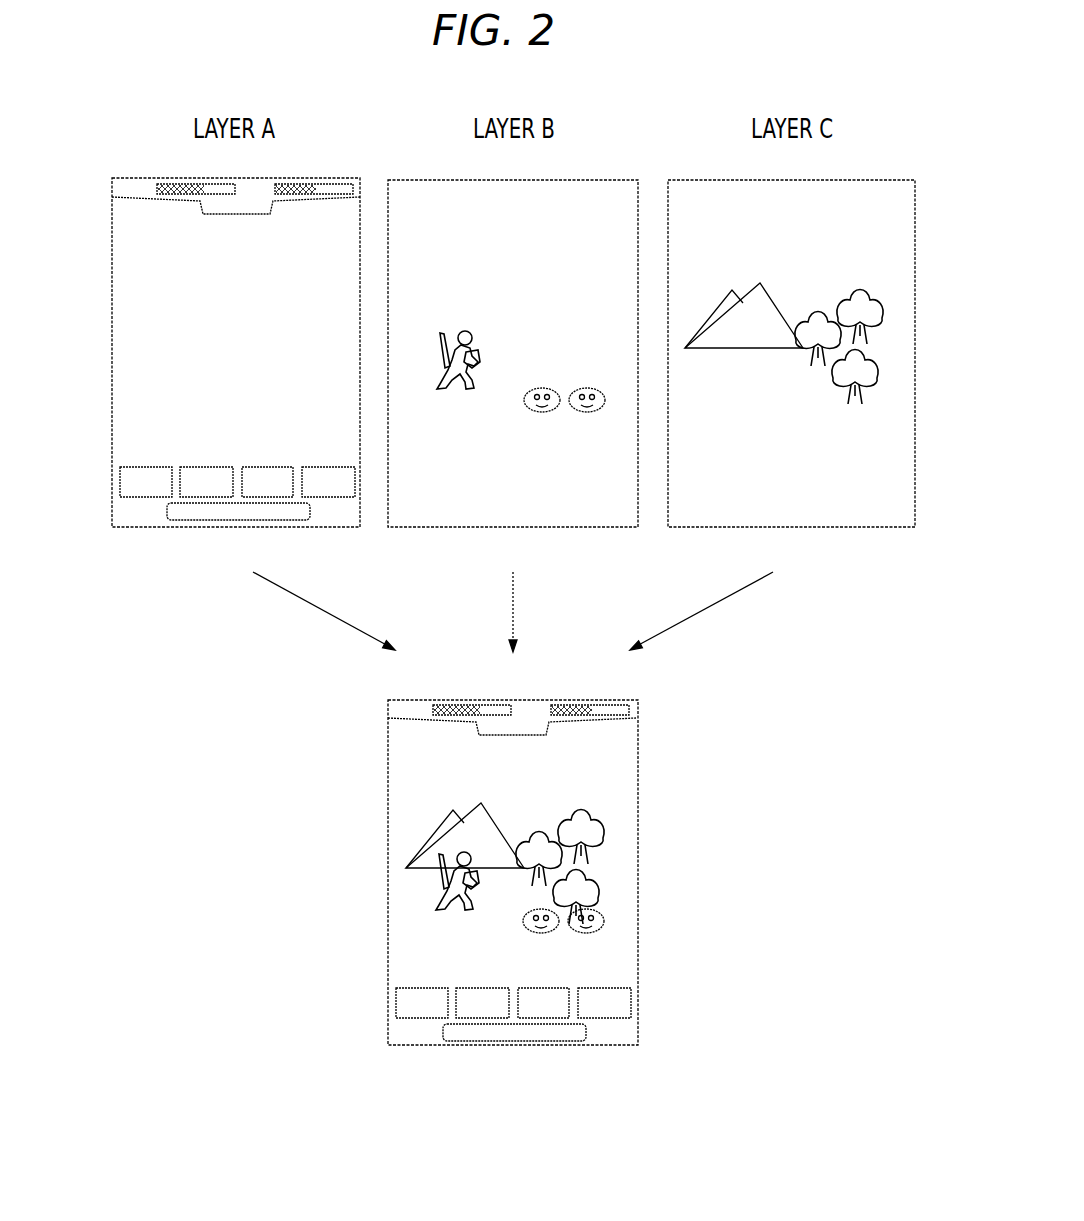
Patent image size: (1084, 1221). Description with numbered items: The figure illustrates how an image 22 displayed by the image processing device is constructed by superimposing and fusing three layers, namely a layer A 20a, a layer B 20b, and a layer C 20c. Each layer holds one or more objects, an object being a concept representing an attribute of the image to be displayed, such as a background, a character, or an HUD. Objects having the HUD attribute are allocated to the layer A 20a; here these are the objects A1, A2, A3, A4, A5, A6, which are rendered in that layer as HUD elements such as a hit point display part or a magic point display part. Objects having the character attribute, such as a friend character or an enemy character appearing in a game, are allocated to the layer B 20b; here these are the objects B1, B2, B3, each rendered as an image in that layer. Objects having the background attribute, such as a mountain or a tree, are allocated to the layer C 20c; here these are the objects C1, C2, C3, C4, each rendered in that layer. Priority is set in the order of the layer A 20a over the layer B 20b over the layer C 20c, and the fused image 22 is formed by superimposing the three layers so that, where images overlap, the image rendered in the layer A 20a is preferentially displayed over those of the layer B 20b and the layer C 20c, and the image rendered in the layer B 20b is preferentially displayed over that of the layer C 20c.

The layer A 20a is at (320, 178).
The layer B 20b is at (600, 180).
The layer C 20c is at (870, 180).
The image 22 is at (575, 700).
The object A1 is at (112, 196).
The object A2 is at (128, 470).
The object A3 is at (195, 470).
The object A4 is at (255, 470).
The object A5 is at (315, 470).
The object A6 is at (236, 522).
The object B1 is at (462, 330).
The object B2 is at (540, 388).
The object B3 is at (585, 388).
The object C1 is at (735, 297).
The object C2 is at (814, 318).
The object C3 is at (868, 293).
The object C4 is at (834, 384).